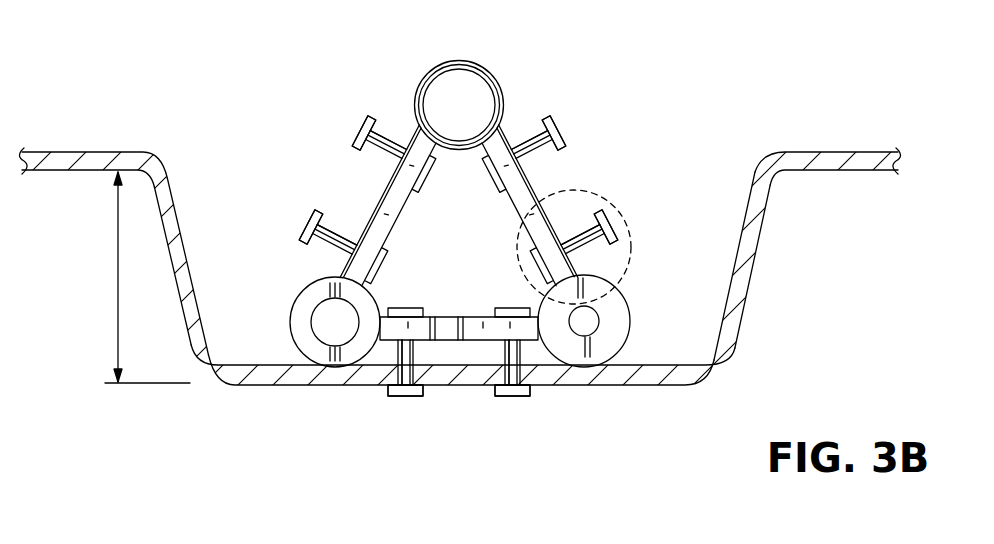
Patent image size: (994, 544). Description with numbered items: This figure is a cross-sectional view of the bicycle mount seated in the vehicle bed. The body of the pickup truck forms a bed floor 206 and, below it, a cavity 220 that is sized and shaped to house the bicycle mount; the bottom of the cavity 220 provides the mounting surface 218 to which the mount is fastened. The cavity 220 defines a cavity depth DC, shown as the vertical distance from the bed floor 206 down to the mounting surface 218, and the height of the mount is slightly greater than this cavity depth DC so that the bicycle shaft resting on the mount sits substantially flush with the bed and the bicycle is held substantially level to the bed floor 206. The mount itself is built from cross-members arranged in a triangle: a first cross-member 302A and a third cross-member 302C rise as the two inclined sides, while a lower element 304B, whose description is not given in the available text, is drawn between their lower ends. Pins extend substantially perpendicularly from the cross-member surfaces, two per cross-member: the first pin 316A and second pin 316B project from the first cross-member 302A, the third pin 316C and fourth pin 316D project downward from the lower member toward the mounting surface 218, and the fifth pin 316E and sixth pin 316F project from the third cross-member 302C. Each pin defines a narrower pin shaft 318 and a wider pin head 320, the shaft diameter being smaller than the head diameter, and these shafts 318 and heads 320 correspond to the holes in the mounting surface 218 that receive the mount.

The bed floor 206 is at (836, 151).
The mounting surface 218 is at (250, 364).
The cavity 220 is at (736, 265).
The first cross-member 302A is at (372, 213).
The third cross-member 302C is at (531, 185).
The base bar 304B is at (481, 342).
The first pin 316A is at (360, 126).
The second pin 316B is at (300, 236).
The third pin 316C is at (407, 398).
The fourth pin 316D is at (507, 398).
The fifth pin 316E is at (628, 223).
The sixth pin 316F is at (560, 117).
The pin shaft 318 is at (402, 150).
The pin head 320 is at (352, 128).
The cavity depth DC is at (115, 285).